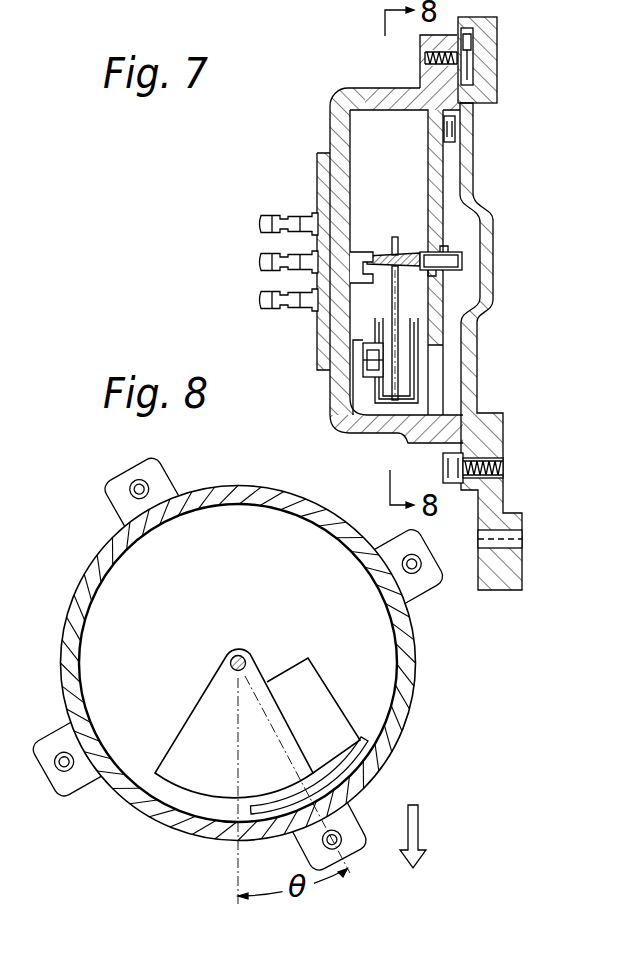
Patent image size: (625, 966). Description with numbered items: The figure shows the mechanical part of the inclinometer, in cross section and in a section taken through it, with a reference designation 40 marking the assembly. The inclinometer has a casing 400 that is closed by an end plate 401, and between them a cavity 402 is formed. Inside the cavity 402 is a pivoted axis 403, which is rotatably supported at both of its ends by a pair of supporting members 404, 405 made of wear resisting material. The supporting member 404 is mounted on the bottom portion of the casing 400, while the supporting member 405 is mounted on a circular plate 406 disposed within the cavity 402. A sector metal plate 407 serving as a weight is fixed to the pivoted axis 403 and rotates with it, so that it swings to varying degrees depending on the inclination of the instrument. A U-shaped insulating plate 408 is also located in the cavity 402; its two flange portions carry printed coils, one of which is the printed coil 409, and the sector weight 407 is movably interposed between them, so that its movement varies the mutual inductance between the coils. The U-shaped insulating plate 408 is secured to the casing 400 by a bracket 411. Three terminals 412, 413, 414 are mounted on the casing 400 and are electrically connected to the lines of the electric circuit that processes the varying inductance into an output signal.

In FIG. 7, the sensor assembly 40 is at (373, 413).
In FIG. 7, the casing 400 is at (332, 100).
In FIG. 8, the casing 400 is at (371, 547).
In FIG. 7, the end plate 401 is at (474, 152).
In FIG. 7, the cavity 402 is at (415, 174).
In FIG. 7, the pivoted axis 403 is at (407, 248).
In FIG. 8, the pivoted axis 403 is at (241, 655).
In FIG. 7, the supporting member 404 is at (320, 308).
In FIG. 7, the supporting member 405 is at (462, 263).
In FIG. 7, the circular plate 406 is at (450, 228).
In FIG. 7, the sector metal plate 407 is at (495, 311).
In FIG. 8, the sector metal plate 407 is at (190, 702).
In FIG. 7, the U-shaped insulating plate 408 is at (400, 433).
In FIG. 8, the U-shaped insulating plate 408 is at (333, 690).
In FIG. 7, the printed coil 409 is at (420, 389).
In FIG. 8, the printed coil 409 is at (296, 670).
In FIG. 7, the bracket 411 is at (363, 372).
In FIG. 7, the terminal 412 is at (268, 214).
In FIG. 7, the terminal 413 is at (264, 256).
In FIG. 7, the terminal 414 is at (260, 299).